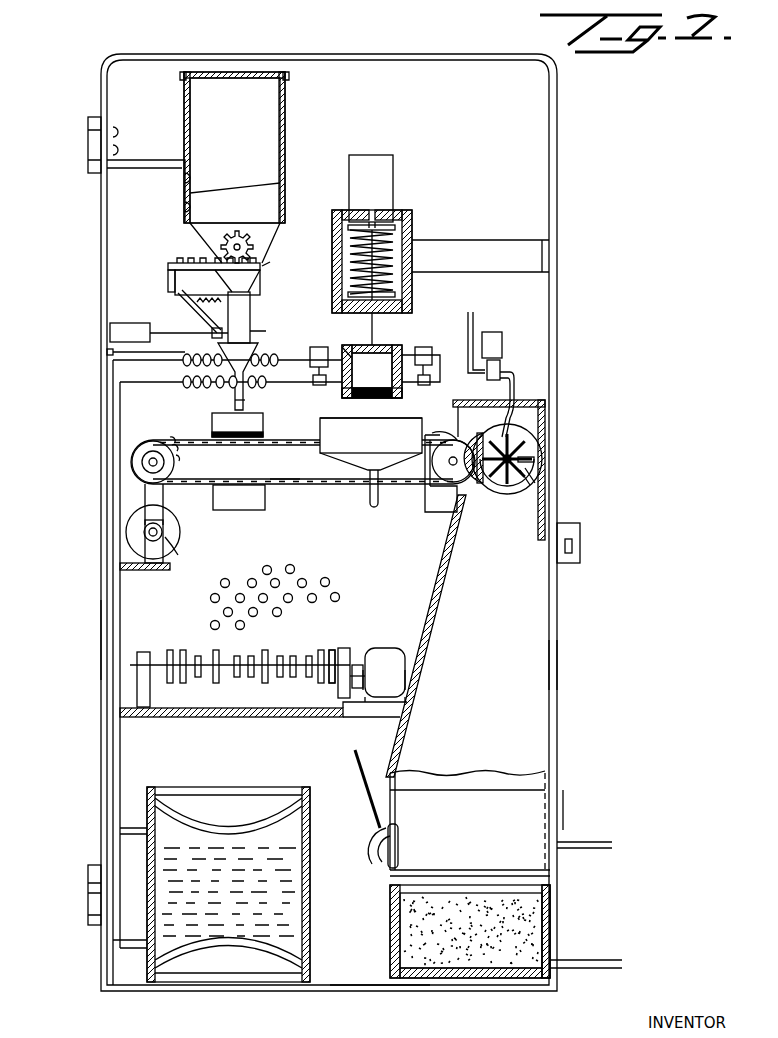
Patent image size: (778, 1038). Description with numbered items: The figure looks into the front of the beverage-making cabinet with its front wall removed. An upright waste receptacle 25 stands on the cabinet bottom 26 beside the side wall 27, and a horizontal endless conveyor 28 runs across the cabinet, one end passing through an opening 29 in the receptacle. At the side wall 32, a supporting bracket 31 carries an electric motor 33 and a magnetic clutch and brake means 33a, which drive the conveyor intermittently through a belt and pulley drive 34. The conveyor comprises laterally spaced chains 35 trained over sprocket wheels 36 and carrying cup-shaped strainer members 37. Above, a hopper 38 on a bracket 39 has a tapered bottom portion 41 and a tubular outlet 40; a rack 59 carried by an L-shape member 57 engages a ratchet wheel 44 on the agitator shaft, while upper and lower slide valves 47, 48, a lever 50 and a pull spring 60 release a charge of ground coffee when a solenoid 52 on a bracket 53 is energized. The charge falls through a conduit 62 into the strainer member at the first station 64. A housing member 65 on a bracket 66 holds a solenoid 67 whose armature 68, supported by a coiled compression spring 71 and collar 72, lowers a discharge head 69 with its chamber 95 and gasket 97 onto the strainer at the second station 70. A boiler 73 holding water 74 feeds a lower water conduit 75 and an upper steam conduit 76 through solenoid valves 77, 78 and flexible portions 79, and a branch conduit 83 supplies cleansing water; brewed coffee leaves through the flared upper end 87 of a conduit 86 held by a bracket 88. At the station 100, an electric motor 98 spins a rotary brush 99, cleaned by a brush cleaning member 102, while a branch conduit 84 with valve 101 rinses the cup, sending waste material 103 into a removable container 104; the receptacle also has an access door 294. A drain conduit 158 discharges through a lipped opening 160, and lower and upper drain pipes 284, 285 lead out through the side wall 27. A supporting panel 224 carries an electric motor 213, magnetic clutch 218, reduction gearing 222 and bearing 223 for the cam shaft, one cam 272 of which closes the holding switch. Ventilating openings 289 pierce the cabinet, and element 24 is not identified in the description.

The latch 24 is at (580, 543).
The waste receptacle 25 is at (550, 666).
The cabinet bottom 26 is at (380, 992).
The cabinet side wall 27 is at (566, 830).
The endless conveyor 28 is at (313, 490).
The opening 29 is at (466, 520).
The supporting bracket 31 is at (153, 572).
The side wall 32 is at (101, 632).
The electric motor 33 is at (170, 538).
The magnetic clutch and brake means 33a is at (170, 560).
The belt and pulley drive 34 is at (170, 466).
The chains 35 is at (278, 480).
The sprocket wheels 36 is at (176, 448).
The strainer members 37 is at (480, 432).
The hopper 38 is at (284, 166).
The bracket 39 is at (149, 170).
The tubular outlet 40 is at (250, 308).
The tapered bottom portion 41 is at (270, 235).
The ratchet wheel 44 is at (242, 232).
The upper slide valve 47 is at (217, 282).
The lower slide valve 48 is at (266, 331).
The lever 50 is at (192, 314).
The solenoid 52 is at (143, 323).
The bracket 53 is at (107, 355).
The L-shape member 57 is at (168, 276).
The rack 59 is at (195, 260).
The pull spring 60 is at (255, 265).
The conduit 62 is at (236, 395).
The first station 64 is at (257, 400).
The housing member 65 is at (411, 232).
The bracket 66 is at (488, 252).
The solenoid 67 is at (392, 200).
The armature 68 is at (375, 330).
The discharge head 69 is at (343, 341).
The second station 70 is at (413, 406).
The coiled compression spring 71 is at (346, 282).
The collar 72 is at (348, 243).
The boiler 73 is at (282, 788).
The water 74 is at (300, 855).
The lower water conduit 75 is at (113, 940).
The upper steam conduit 76 is at (128, 778).
The solenoid actuated valve 77 is at (428, 372).
The solenoid actuated valve 78 is at (314, 360).
The flexible portions 79 is at (185, 366).
The branch conduit 83 is at (378, 356).
The branch conduit 84 is at (512, 390).
The conduit 86 is at (380, 503).
The flared upper end 87 is at (371, 444).
The bracket 88 is at (431, 513).
The chamber 95 is at (372, 370).
The gasket 97 is at (342, 396).
The electric motor 98 is at (535, 432).
The rotary brush 99 is at (534, 462).
The station 100 is at (518, 499).
The solenoid actuated valve 101 is at (495, 372).
The brush cleaning member 102 is at (536, 480).
The waste material 103 is at (465, 898).
The removable open top container 104 is at (542, 910).
The drain conduit 158 is at (368, 795).
The lipped opening 160 is at (377, 855).
The electric motor 213 is at (388, 648).
The magnetic clutch 218 is at (356, 664).
The reduction gearing 222 is at (343, 648).
The bearing 223 is at (147, 654).
The supporting bar or panel 224 is at (302, 714).
The cam 272 is at (332, 680).
The lower drain pipe 284 is at (608, 960).
The upper drain pipe 285 is at (612, 848).
The ventilating openings 289 is at (313, 588).
The access door 294 is at (490, 786).